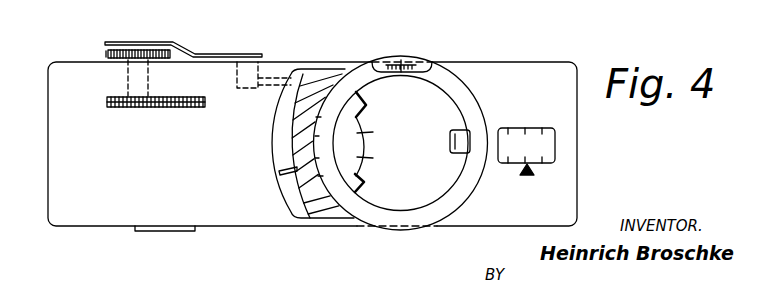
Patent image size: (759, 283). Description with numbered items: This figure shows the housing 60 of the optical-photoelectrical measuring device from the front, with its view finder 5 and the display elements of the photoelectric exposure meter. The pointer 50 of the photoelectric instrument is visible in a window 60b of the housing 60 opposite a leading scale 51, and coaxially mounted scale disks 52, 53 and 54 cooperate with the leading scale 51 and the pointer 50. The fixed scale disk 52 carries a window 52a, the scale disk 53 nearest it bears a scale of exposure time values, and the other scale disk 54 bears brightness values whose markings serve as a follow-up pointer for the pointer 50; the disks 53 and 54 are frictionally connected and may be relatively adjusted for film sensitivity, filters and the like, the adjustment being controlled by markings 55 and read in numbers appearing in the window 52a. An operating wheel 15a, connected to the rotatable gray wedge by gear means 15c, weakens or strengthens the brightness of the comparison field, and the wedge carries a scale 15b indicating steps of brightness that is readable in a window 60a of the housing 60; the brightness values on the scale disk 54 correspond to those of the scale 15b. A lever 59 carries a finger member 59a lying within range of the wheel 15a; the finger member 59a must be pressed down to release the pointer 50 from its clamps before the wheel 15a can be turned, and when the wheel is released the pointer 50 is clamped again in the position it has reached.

The view finder 5 is at (165, 229).
The operating wheel 15a is at (108, 53).
The scale 15b is at (532, 153).
The gear means 15c is at (178, 108).
The pointer 50 is at (290, 178).
The leading scale 51 is at (327, 82).
The fixed scale disk 52 is at (410, 193).
The window 52a is at (460, 130).
The scale disk 53 is at (357, 181).
The scale disk 54 is at (357, 82).
The markings 55 is at (412, 60).
The lever 59 is at (203, 55).
The finger member 59a is at (128, 50).
The housing 60 is at (110, 210).
The window 60a is at (513, 128).
The window 60b is at (306, 213).